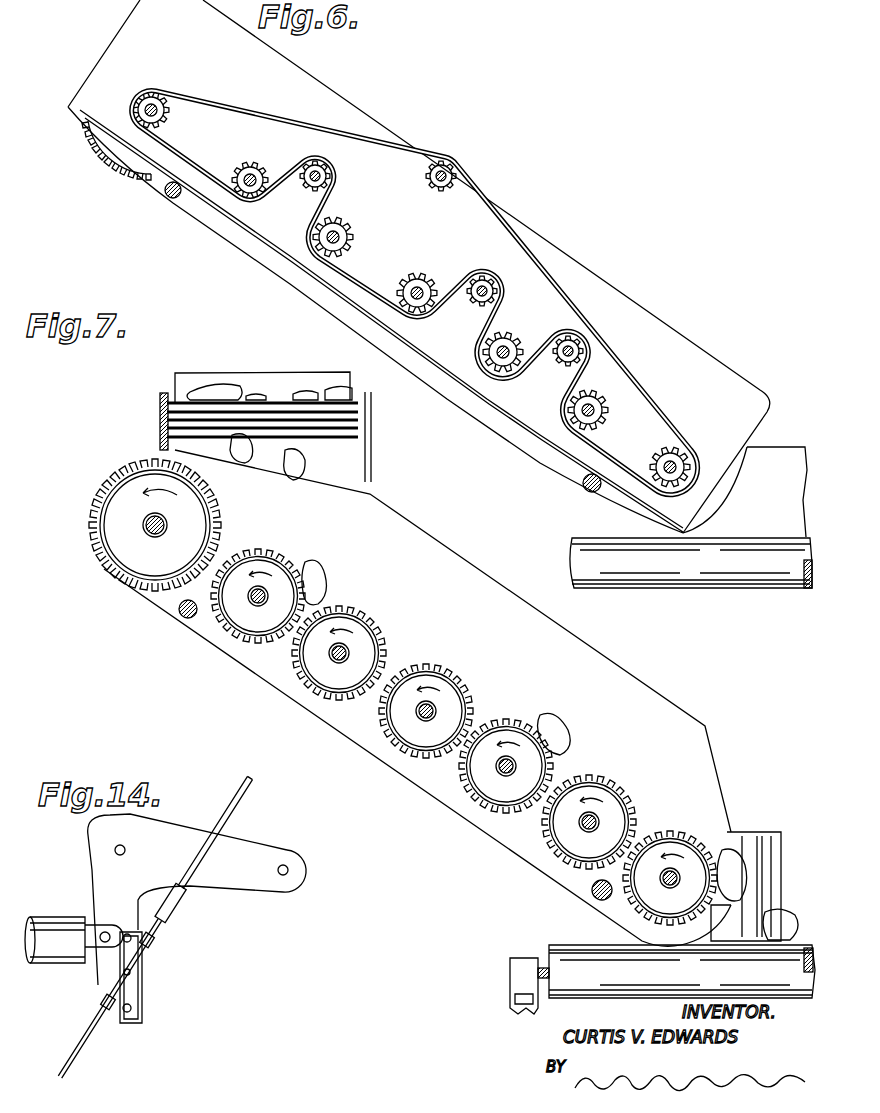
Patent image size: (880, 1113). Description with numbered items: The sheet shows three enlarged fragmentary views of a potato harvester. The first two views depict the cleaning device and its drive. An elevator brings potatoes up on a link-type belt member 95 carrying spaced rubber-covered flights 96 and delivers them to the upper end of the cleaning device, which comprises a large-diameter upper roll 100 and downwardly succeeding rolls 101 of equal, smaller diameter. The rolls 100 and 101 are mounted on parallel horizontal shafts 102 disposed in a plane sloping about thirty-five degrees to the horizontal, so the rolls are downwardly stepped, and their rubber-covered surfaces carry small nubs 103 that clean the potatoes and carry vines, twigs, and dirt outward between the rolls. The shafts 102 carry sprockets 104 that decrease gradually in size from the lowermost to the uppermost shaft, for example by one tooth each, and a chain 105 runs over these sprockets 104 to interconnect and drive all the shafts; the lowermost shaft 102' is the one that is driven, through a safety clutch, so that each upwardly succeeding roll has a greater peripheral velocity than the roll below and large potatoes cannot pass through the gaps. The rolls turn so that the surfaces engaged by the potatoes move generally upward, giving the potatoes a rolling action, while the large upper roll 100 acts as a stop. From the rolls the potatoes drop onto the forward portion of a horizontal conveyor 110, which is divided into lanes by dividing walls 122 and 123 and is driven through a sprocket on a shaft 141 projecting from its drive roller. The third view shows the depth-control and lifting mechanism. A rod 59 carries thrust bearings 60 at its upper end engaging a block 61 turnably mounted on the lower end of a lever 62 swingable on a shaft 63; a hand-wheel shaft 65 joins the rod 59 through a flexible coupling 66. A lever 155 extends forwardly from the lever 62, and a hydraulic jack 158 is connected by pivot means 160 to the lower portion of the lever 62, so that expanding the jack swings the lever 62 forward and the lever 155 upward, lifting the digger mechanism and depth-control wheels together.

In FIG. 6, the upper roll 100 is at (97, 147).
In FIG. 7, the upper roll 100 is at (93, 540).
In FIG. 7, the downwardly succeeding rolls 101 is at (284, 585).
In FIG. 6, the horizontal shafts 102 is at (391, 255).
In FIG. 7, the horizontal shafts 102 is at (327, 672).
In FIG. 6, the lowermost shaft 102' is at (700, 449).
In FIG. 7, the lowermost shaft 102' is at (689, 840).
In FIG. 7, the nubs 103 is at (92, 507).
In FIG. 6, the sprockets 104 is at (166, 116).
In FIG. 6, the chain 105 is at (553, 278).
In FIG. 6, the horizontal conveyor 110 is at (727, 538).
In FIG. 7, the horizontal conveyor 110 is at (588, 945).
In FIG. 6, the dividing wall 122 is at (790, 447).
In FIG. 7, the dividing wall 123 is at (741, 832).
In FIG. 7, the shaft 141 is at (545, 972).
In FIG. 7, the belt member 95 is at (167, 400).
In FIG. 7, the rubber-covered flights 96 is at (188, 378).
In FIG. 14, the rod 59 is at (88, 1043).
In FIG. 14, the thrust bearings 60 is at (155, 938).
In FIG. 14, the block 61 is at (145, 960).
In FIG. 14, the lever 62 is at (92, 867).
In FIG. 14, the shaft 63 is at (126, 850).
In FIG. 14, the shaft 65 is at (228, 822).
In FIG. 14, the flexible coupling 66 is at (176, 905).
In FIG. 14, the lever 155 is at (238, 873).
In FIG. 14, the hydraulic cylinder piston mechanism 158 is at (87, 920).
In FIG. 14, the pivot means 160 is at (104, 943).